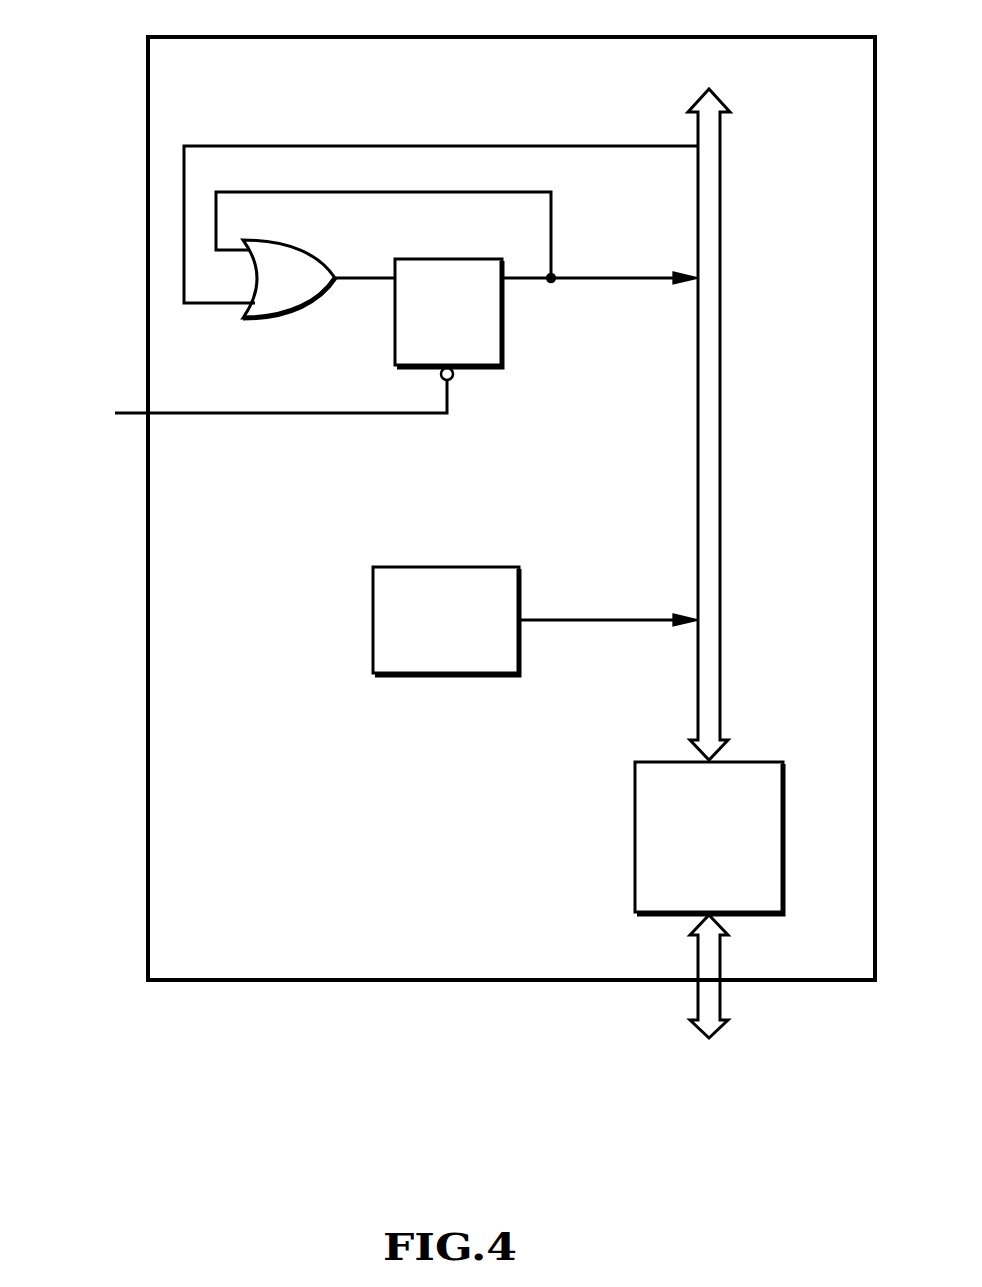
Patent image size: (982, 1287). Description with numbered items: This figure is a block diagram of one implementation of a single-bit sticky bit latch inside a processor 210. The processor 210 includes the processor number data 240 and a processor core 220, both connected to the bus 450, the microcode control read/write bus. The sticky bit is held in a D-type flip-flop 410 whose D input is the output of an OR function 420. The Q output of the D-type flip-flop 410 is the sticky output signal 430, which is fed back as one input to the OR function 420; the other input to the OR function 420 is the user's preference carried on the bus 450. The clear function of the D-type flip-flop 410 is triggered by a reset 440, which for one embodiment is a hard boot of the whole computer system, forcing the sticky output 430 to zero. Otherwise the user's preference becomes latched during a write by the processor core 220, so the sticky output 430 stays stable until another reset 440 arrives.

The processor 210 is at (241, 37).
The processor core 220 is at (785, 783).
The processor number data 240 is at (427, 567).
The D-type flip-flop 410 is at (447, 258).
The OR function 420 is at (285, 325).
The sticky output signal 430 is at (651, 275).
The reset 440 is at (228, 415).
The bus 450 is at (720, 510).